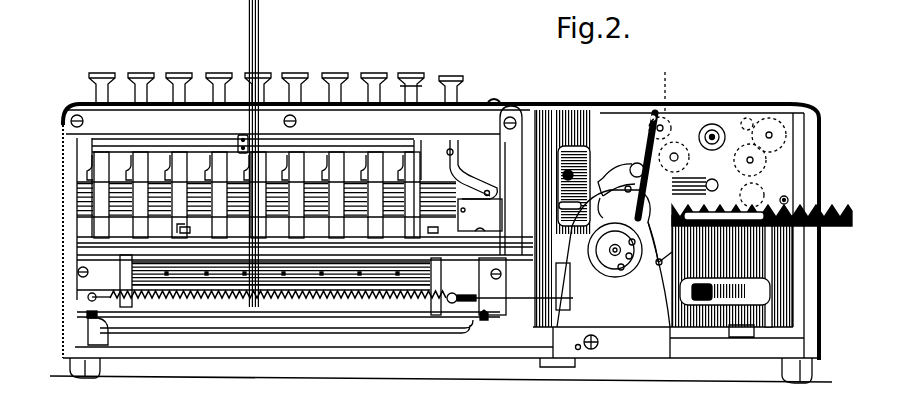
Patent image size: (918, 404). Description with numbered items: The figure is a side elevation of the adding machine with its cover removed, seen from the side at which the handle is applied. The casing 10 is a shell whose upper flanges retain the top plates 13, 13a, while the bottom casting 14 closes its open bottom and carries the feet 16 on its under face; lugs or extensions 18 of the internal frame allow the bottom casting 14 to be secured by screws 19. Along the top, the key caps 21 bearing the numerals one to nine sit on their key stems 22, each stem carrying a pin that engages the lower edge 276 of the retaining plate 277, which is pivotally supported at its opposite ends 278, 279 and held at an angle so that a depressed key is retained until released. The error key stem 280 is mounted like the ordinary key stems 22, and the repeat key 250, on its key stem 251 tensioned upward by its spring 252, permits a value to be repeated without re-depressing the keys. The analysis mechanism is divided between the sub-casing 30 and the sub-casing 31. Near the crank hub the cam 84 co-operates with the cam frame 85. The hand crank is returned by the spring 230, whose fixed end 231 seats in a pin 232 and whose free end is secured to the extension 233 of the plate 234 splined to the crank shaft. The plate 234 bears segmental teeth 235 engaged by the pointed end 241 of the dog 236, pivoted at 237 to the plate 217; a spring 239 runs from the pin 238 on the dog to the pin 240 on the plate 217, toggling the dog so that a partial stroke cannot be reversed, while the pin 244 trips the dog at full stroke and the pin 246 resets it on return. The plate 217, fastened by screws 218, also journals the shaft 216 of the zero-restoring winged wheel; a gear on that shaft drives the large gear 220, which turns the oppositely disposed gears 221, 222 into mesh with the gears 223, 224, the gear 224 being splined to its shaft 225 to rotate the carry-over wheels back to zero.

The casing 10 is at (66, 172).
The top plate 13 is at (469, 108).
The top plate 13a is at (592, 104).
The bottom casting 14 is at (214, 345).
The feet 16 is at (79, 364).
The lugs or extensions 18 is at (94, 334).
The screws 19 is at (100, 316).
The caps 21 is at (223, 80).
The key stems 22 is at (182, 99).
The sub-casing 30 is at (413, 335).
The sub-casing 31 is at (365, 290).
The cam 84 is at (612, 262).
The cam frame 85 is at (575, 255).
The shaft 216 is at (713, 135).
The plate 217 is at (746, 118).
The screws 218 is at (788, 198).
The large gear 220 is at (748, 148).
The gear 221 is at (724, 192).
The gear 222 is at (681, 144).
The gear 223 is at (776, 120).
The gear 224 is at (669, 85).
The shaft 225 is at (664, 132).
The spring 230 is at (331, 303).
The fixed end 231 is at (92, 301).
The pin 232 is at (89, 296).
The extension 233 is at (563, 312).
The plate 234 is at (655, 242).
The segmental teeth 235 is at (680, 248).
The dog 236 is at (621, 166).
The pivot 237 is at (636, 163).
The pin 238 is at (672, 212).
The spring 239 is at (615, 208).
The pin 240 is at (652, 112).
The pointed end 241 is at (607, 178).
The pin 244 is at (658, 298).
The pin 246 is at (628, 192).
The repeat key 250 is at (451, 84).
The key stem 251 is at (472, 168).
The spring 252 is at (451, 148).
The lower edge 276 is at (309, 156).
The plate 277 is at (352, 147).
The pivot end 278 is at (505, 112).
The pivot end 279 is at (90, 140).
The key stem 280 is at (241, 136).